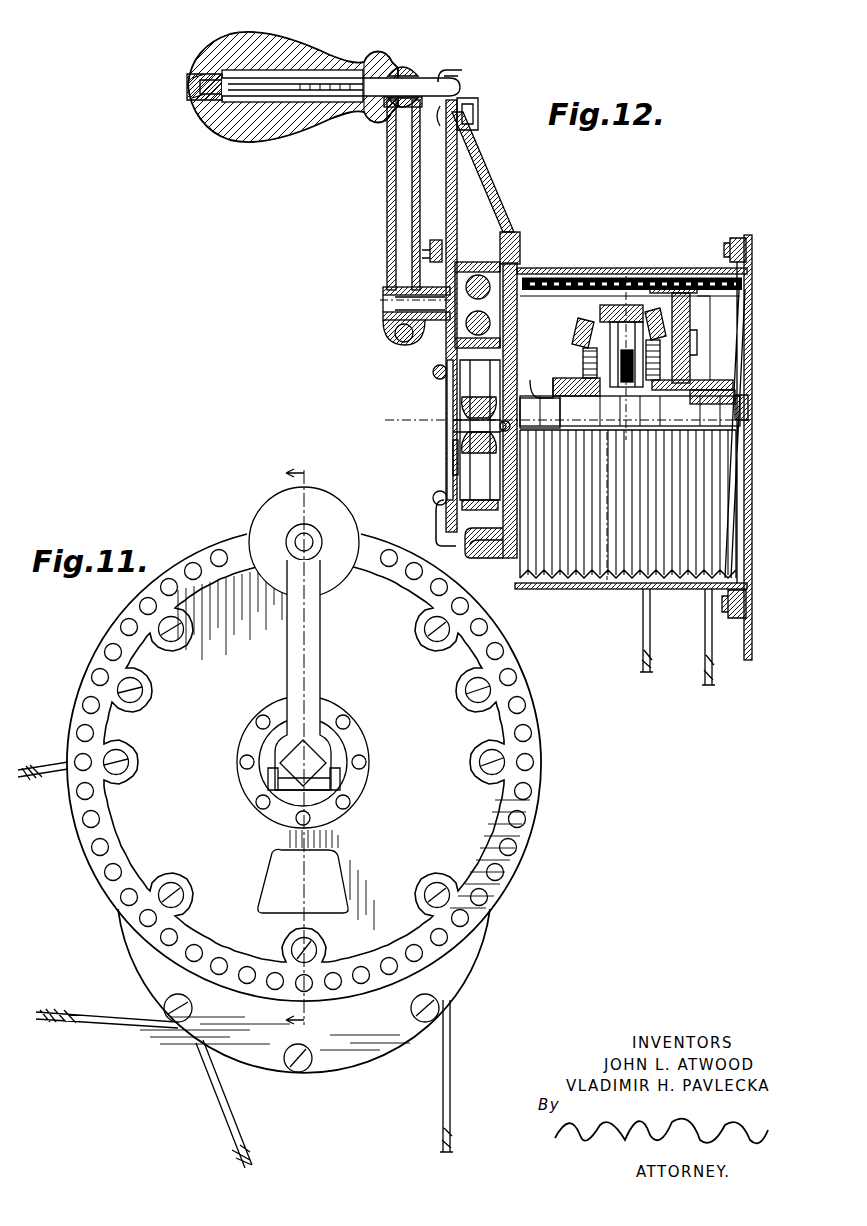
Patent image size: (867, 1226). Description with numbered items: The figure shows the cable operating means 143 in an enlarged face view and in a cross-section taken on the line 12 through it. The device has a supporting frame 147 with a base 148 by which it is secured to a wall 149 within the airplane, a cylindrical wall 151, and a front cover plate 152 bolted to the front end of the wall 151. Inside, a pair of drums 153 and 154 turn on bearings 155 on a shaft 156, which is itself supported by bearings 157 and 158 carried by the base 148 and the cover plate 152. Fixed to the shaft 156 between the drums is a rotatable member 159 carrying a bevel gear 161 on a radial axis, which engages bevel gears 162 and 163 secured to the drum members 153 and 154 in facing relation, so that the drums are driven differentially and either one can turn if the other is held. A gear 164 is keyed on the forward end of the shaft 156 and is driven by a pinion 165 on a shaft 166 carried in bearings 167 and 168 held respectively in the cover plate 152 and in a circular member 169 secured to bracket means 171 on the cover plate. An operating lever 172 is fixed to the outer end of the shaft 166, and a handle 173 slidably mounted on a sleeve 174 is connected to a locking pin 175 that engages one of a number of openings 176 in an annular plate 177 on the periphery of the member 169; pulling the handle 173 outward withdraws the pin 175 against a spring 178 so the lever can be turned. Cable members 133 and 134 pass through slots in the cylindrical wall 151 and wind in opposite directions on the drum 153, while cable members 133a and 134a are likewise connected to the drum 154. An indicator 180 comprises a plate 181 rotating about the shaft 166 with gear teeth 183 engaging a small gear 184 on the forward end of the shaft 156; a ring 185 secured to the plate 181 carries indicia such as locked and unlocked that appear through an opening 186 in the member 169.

In FIG. 11, the section line 12 is at (295, 747).
In FIG. 12, the cable member 133 is at (651, 619).
In FIG. 11, the cable member 133 is at (222, 1112).
In FIG. 11, the cable member 133a is at (60, 764).
In FIG. 12, the cable member 134 is at (707, 640).
In FIG. 11, the cable member 134 is at (442, 1078).
In FIG. 11, the cable member 134a is at (82, 1010).
In FIG. 12, the cable operating means 143 is at (556, 237).
In FIG. 11, the cable operating means 143 is at (304, 746).
In FIG. 12, the supporting frame 147 is at (660, 268).
In FIG. 12, the base 148 is at (748, 616).
In FIG. 12, the wall 149 is at (748, 358).
In FIG. 12, the cylindrical wall 151 is at (588, 586).
In FIG. 12, the front cover plate 152 is at (503, 562).
In FIG. 11, the front cover plate 152 is at (478, 956).
In FIG. 12, the drum member 153 is at (728, 262).
In FIG. 12, the drum member 154 is at (588, 277).
In FIG. 12, the bearings 155 is at (568, 375).
In FIG. 12, the shaft 156 is at (748, 410).
In FIG. 12, the bearing 157 is at (710, 388).
In FIG. 12, the bearing 158 is at (545, 396).
In FIG. 12, the rotatable member 159 is at (640, 360).
In FIG. 12, the bevel gear 161 is at (651, 300).
In FIG. 12, the bevel gear 162 is at (516, 262).
In FIG. 12, the bevel gear 163 is at (578, 332).
In FIG. 12, the gear 164 is at (472, 385).
In FIG. 12, the pinion 165 is at (488, 255).
In FIG. 12, the shaft 166 is at (400, 299).
In FIG. 12, the bearing 167 is at (532, 280).
In FIG. 12, the bearing 168 is at (432, 256).
In FIG. 12, the member 169 is at (448, 190).
In FIG. 11, the member 169 is at (505, 736).
In FIG. 12, the bracket means 171 is at (478, 150).
In FIG. 12, the operating lever 172 is at (404, 214).
In FIG. 11, the operating lever 172 is at (318, 642).
In FIG. 12, the handle 173 is at (262, 118).
In FIG. 11, the handle 173 is at (330, 526).
In FIG. 12, the sleeve 174 is at (390, 62).
In FIG. 12, the locking pin 175 is at (368, 104).
In FIG. 12, the openings 176 is at (440, 74).
In FIG. 11, the openings 176 is at (506, 796).
In FIG. 11, the annular plate 177 is at (234, 548).
In FIG. 12, the spring 178 is at (326, 72).
In FIG. 12, the indicator 180 is at (452, 268).
In FIG. 12, the plate 181 is at (433, 373).
In FIG. 12, the gear teeth 183 is at (458, 230).
In FIG. 12, the small gear 184 is at (462, 430).
In FIG. 12, the ring 185 is at (446, 408).
In FIG. 11, the ring 185 is at (280, 858).
In FIG. 12, the opening 186 is at (446, 452).
In FIG. 11, the opening 186 is at (342, 870).